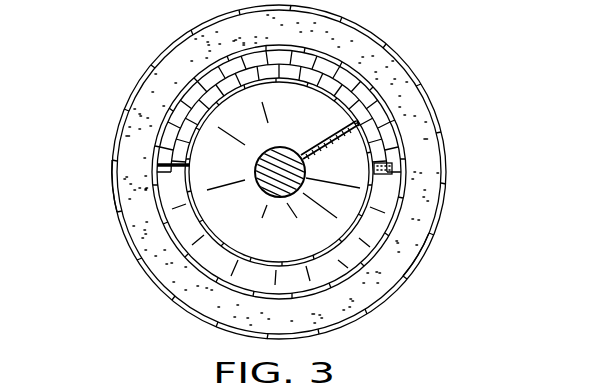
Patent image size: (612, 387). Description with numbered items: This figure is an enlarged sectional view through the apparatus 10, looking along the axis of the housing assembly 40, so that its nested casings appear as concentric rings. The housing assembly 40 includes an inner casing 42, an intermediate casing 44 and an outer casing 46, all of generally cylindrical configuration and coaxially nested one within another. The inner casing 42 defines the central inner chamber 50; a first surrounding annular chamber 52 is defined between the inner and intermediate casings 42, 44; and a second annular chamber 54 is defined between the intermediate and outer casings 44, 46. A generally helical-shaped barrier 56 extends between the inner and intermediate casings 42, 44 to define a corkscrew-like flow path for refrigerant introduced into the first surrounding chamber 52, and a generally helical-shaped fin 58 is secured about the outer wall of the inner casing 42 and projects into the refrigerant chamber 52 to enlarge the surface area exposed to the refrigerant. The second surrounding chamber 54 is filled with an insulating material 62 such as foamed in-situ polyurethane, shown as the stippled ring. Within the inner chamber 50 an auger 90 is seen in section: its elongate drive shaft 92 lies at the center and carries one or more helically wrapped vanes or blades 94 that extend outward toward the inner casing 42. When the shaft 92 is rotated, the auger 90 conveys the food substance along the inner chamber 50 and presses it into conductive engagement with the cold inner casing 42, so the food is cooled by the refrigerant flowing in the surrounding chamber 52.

The rotary apparatus 10 is at (465, 73).
The housing assembly 40 is at (449, 129).
The inner casing 42 is at (199, 212).
The intermediate casing 44 is at (178, 244).
The outer casing 46 is at (116, 202).
The inner chamber 50 is at (247, 108).
The first surrounding annular chamber 52 is at (178, 65).
The second annular chamber 54 is at (230, 32).
The helical-shaped barrier 56 is at (162, 179).
The helical-shaped fin 58 is at (384, 158).
The insulating material 62 is at (416, 264).
The auger 90 is at (360, 188).
The drive shaft 92 is at (259, 143).
The helically wrapped vanes or blades 94 is at (326, 144).